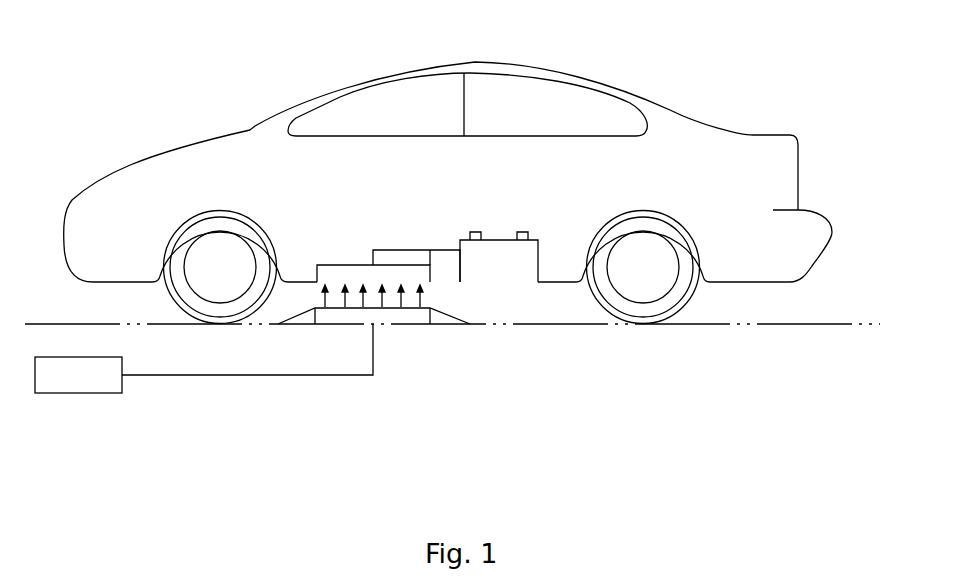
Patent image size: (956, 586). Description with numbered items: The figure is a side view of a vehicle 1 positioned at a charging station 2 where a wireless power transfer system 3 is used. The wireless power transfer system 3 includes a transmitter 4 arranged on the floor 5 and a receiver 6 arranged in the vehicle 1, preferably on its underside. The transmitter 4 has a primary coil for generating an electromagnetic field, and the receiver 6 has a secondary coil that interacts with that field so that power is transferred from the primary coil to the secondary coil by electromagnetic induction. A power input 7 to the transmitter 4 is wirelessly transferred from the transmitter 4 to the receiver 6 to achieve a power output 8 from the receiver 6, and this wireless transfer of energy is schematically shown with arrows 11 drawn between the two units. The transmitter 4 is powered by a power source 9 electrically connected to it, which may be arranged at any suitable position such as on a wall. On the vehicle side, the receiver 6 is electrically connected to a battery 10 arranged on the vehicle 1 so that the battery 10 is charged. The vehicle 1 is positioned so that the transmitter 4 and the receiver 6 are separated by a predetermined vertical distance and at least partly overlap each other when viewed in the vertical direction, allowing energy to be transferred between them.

The vehicle 1 is at (483, 62).
The charging station 2 is at (448, 172).
The wireless power transfer system 3 is at (384, 365).
The transmitter 4 is at (403, 316).
The floor 5 is at (582, 326).
The receiver 6 is at (343, 276).
The power input 7 is at (250, 377).
The power output 8 is at (408, 251).
The power source 9 is at (82, 393).
The battery 10 is at (503, 260).
The arrows 11 is at (422, 298).